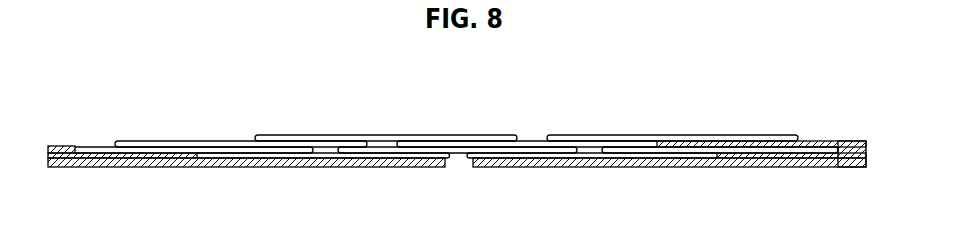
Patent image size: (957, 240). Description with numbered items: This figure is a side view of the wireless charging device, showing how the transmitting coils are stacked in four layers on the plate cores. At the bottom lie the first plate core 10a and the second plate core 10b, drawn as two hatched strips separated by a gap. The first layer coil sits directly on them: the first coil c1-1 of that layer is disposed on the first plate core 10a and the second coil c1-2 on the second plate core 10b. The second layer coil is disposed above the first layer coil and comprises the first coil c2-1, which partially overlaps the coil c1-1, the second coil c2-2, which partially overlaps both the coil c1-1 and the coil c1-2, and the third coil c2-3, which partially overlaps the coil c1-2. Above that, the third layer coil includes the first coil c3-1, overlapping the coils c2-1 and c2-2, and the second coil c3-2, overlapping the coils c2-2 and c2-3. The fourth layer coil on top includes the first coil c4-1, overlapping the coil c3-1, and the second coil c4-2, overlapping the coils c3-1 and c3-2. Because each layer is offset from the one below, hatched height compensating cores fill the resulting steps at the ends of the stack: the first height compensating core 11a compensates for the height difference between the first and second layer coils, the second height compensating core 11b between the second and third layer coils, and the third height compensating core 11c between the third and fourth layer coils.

The first plate core 10a is at (173, 162).
The second plate core 10b is at (692, 162).
The first height compensating core 11a is at (117, 156).
The second height compensating core 11b is at (62, 160).
The third height compensating core 11c is at (802, 144).
The 1-1 coil c1-1 is at (555, 156).
The 1-2 coil c1-2 is at (319, 156).
The 2-1 coil c2-1 is at (628, 150).
The 2-2 coil c2-2 is at (405, 150).
The 2-3 coil c2-3 is at (162, 149).
The 3-1 coil c3-1 is at (480, 144).
The 3-2 coil c3-2 is at (238, 144).
The 4-1 coil c4-1 is at (620, 138).
The 4-2 coil c4-2 is at (318, 138).